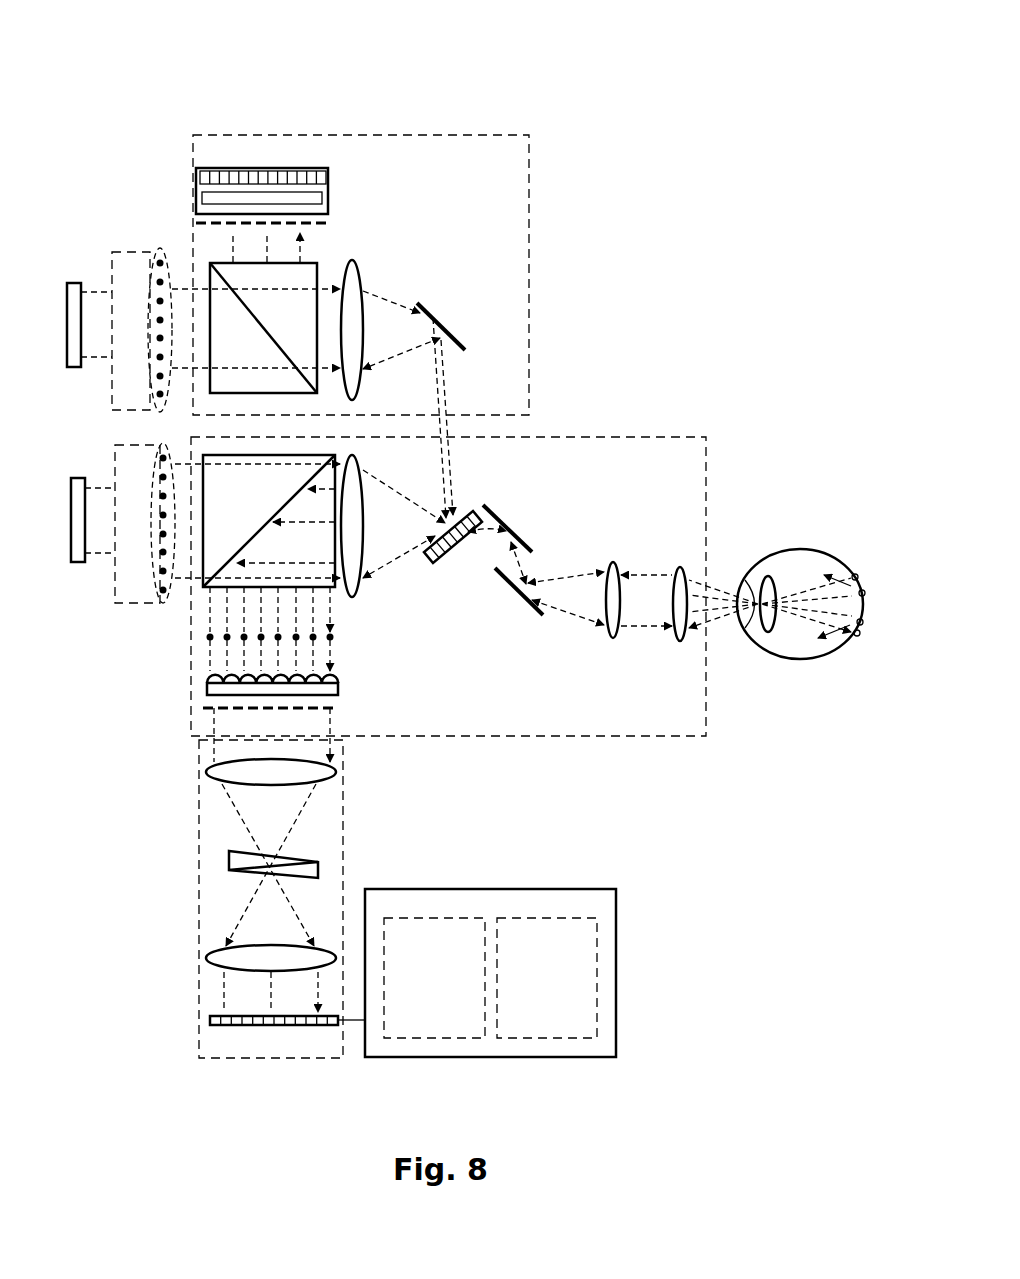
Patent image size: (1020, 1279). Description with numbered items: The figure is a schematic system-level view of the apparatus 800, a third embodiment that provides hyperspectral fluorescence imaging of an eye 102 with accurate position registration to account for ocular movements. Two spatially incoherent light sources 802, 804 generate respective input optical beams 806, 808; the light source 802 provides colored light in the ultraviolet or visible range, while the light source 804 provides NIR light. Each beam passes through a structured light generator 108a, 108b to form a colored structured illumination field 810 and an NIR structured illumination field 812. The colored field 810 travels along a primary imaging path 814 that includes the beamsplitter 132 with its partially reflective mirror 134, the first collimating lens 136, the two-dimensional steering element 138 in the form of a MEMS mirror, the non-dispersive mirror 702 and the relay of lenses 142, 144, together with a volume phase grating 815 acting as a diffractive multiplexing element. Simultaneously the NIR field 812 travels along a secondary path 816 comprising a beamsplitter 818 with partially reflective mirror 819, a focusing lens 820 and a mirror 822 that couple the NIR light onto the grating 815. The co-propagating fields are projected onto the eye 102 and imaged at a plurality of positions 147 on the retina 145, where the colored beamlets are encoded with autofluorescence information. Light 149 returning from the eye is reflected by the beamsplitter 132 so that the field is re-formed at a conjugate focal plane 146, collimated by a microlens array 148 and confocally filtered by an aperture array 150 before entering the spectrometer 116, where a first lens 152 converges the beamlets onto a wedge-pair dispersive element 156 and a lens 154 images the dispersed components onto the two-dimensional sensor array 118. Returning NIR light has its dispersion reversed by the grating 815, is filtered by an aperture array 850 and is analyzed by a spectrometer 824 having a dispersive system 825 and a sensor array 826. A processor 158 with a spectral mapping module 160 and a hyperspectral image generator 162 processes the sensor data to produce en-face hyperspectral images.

The apparatus 800 is at (134, 103).
The secondary path 816 is at (529, 214).
The dispersive system 825 is at (198, 190).
The sensor array 826 is at (332, 177).
The spectrometer 824 is at (332, 200).
The aperture array 850 is at (332, 224).
The beamsplitter 818 is at (212, 268).
The partially reflective mirror 819 is at (262, 325).
The structured light generator 108b is at (112, 265).
The light source 804 is at (67, 302).
The input optical beam 808 is at (95, 360).
The structured illumination field 812 is at (158, 250).
The focusing lens 820 is at (364, 278).
The mirror 822 is at (455, 330).
The primary imaging path 814 is at (683, 437).
The beamsplitter 132 is at (205, 457).
The partially reflective mirror 134 is at (262, 528).
The structured light generator 108a is at (115, 462).
The light source 802 is at (71, 497).
The input optical beam 806 is at (96, 556).
The structured illumination field 810 is at (166, 606).
The first collimating lens 136 is at (362, 464).
The volume phase grating 815 is at (452, 552).
The two-dimensional steering element 138 is at (503, 505).
The non-dispersive optical directing element 702 is at (516, 592).
The lens 142 is at (615, 561).
The lens 144 is at (678, 566).
The eye 102 is at (808, 550).
The retina 145 is at (862, 578).
The position 147 is at (862, 634).
The portion of light 149 is at (822, 642).
The conjugate focal plane 146 is at (338, 637).
The microlens array 148 is at (340, 680).
The aperture array 150 is at (340, 707).
The spectrometer 116 is at (343, 832).
The first lens 152 is at (338, 770).
The dispersive element 156 is at (229, 860).
The lens 154 is at (208, 958).
The two-dimensional sensor array 118 is at (210, 1018).
The processor 158 is at (616, 958).
The spectral mapping module 160 is at (432, 918).
The hyperspectral image generator 162 is at (540, 918).